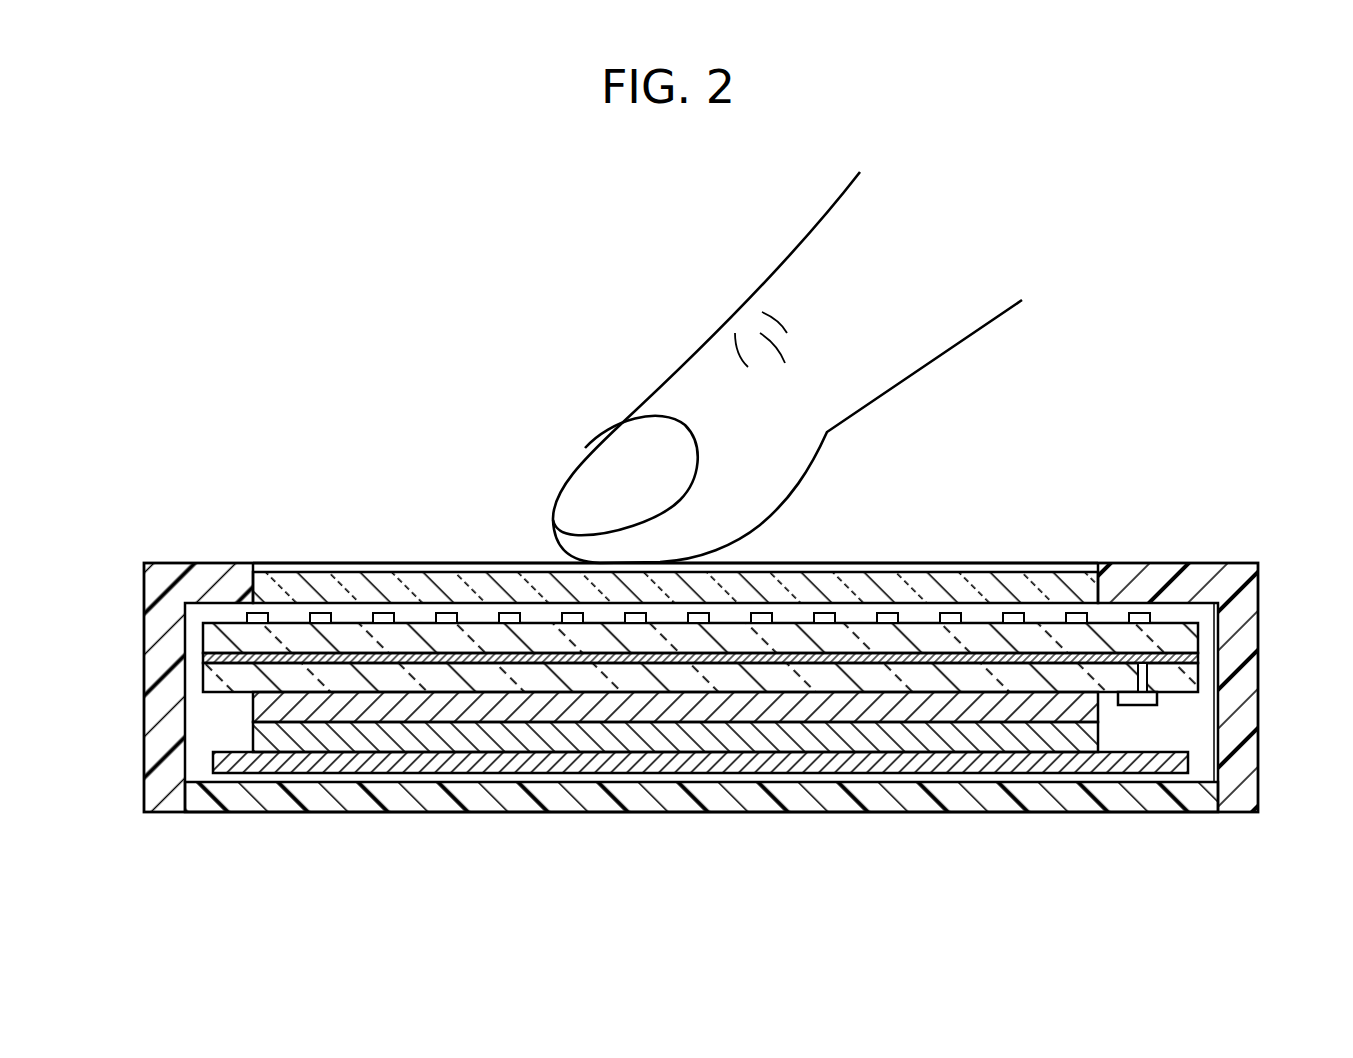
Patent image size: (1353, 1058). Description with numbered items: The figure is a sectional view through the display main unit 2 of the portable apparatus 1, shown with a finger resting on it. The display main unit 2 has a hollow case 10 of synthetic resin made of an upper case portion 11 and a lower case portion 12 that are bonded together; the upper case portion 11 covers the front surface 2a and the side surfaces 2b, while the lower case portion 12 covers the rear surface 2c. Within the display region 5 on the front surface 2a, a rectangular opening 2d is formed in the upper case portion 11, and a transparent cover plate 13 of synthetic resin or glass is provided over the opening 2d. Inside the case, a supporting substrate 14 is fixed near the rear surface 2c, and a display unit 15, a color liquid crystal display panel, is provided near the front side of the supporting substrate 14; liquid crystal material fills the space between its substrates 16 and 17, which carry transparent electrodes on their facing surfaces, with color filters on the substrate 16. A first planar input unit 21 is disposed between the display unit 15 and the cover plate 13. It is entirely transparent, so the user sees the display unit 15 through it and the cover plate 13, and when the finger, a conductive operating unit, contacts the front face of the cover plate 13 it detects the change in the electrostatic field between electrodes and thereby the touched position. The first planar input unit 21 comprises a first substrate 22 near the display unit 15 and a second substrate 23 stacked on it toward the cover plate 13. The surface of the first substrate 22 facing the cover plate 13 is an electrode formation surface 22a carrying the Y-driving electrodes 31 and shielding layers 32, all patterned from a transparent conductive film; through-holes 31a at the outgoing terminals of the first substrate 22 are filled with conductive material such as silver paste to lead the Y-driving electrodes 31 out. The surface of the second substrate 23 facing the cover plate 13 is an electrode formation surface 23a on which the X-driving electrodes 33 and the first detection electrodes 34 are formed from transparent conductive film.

The portable apparatus 1 is at (710, 683).
The display main unit 2 is at (704, 666).
The front surface 2a is at (1153, 565).
The side surfaces 2b is at (145, 672).
The rear surface 2c is at (287, 813).
The rectangular opening 2d is at (1098, 573).
The display region 5 is at (898, 508).
The hollow case 10 is at (135, 757).
The upper case portion 11 is at (158, 622).
The lower case portion 12 is at (525, 798).
The cover plate 13 is at (423, 583).
The supporting substrate 14 is at (1135, 763).
The display unit 15 is at (1115, 723).
The substrate 16 is at (810, 743).
The substrate 17 is at (978, 713).
The first planar input unit 21 is at (701, 615).
The first substrate 22 is at (242, 685).
The electrode formation surface 22a is at (300, 663).
The second substrate 23 is at (222, 640).
The electrode formation surface 23a is at (287, 630).
The Y-driving electrodes 31 is at (500, 663).
The through-holes 31a is at (1143, 677).
The shielding layers 32 is at (1177, 653).
The X-driving electrodes 33 is at (830, 613).
The first detection electrodes 34 is at (643, 613).